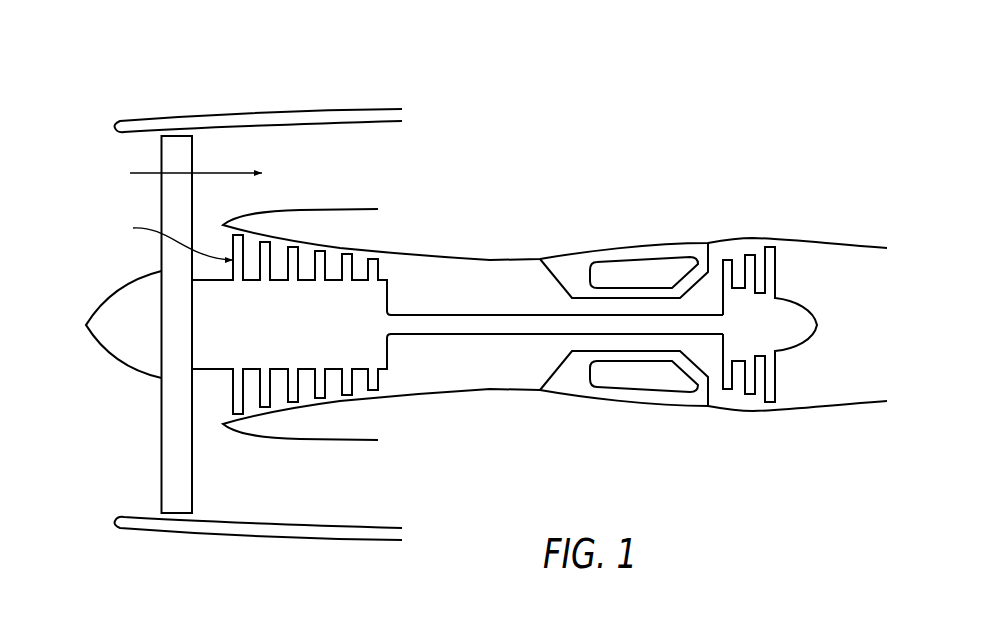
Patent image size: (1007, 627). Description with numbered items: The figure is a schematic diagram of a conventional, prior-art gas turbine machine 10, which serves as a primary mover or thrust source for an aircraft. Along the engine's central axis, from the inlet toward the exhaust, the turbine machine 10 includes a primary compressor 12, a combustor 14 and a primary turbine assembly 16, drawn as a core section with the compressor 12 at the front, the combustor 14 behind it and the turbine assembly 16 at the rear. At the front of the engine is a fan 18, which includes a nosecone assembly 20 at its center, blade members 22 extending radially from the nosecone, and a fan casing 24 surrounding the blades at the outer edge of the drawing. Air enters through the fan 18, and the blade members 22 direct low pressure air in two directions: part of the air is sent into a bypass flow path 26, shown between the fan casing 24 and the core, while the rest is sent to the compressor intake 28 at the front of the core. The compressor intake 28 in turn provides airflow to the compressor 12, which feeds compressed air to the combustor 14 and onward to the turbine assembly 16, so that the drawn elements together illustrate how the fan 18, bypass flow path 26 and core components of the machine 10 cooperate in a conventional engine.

The gas turbine machine 10 is at (640, 147).
The primary compressor 12 is at (323, 313).
The combustor 14 is at (633, 273).
The primary turbine assembly 16 is at (762, 323).
The fan 18 is at (107, 202).
The nosecone assembly 20 is at (122, 347).
The blade members 22 is at (178, 495).
The fan casing 24 is at (262, 118).
The bypass flow path 26 is at (227, 172).
The compressor intake 28 is at (168, 239).